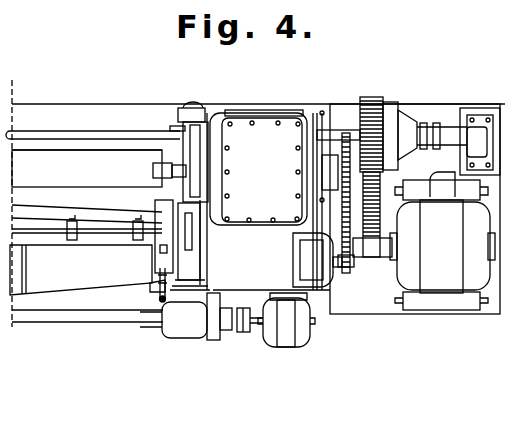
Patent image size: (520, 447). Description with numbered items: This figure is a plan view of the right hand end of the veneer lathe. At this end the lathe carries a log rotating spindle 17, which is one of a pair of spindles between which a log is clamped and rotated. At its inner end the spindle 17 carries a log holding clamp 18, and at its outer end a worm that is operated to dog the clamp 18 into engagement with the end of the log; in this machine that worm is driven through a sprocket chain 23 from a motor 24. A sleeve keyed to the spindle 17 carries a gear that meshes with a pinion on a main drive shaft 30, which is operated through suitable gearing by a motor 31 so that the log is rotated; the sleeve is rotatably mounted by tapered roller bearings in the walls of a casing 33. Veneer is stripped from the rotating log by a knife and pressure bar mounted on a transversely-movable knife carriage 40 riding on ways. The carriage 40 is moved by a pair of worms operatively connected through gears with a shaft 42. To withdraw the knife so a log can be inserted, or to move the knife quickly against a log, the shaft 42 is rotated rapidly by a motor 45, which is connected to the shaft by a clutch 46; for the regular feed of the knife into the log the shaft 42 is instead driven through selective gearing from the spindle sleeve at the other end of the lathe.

The log rotating spindle 17 is at (182, 162).
The log holding clamp 18 is at (149, 171).
The sprocket chain 23 is at (349, 252).
The motor 24 is at (312, 262).
The main drive shaft 30 is at (72, 132).
The motor 31 is at (442, 241).
The casing 33 is at (307, 120).
The knife carriage 40 is at (193, 233).
The shaft 42 is at (137, 312).
The motor 45 is at (285, 340).
The clutch 46 is at (247, 335).